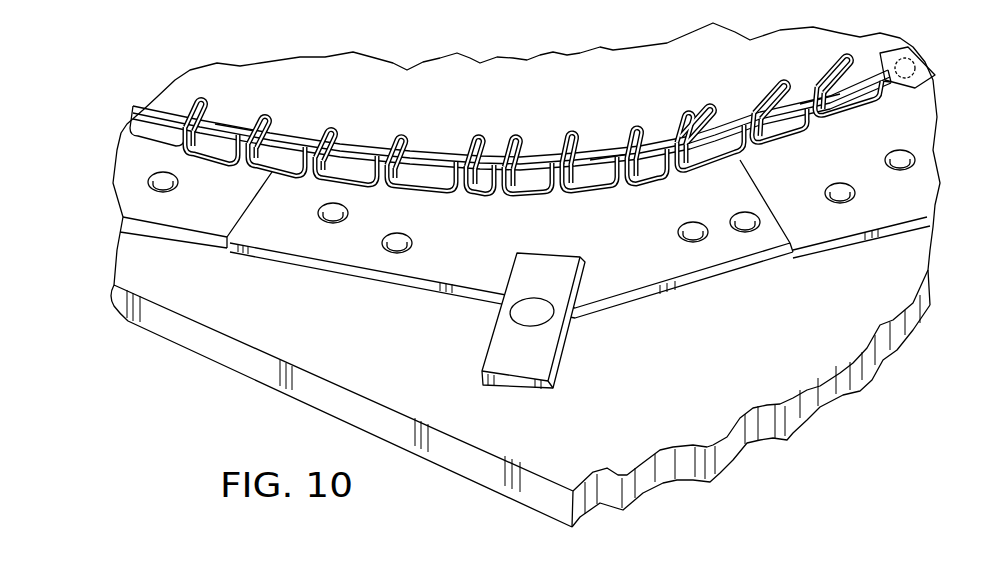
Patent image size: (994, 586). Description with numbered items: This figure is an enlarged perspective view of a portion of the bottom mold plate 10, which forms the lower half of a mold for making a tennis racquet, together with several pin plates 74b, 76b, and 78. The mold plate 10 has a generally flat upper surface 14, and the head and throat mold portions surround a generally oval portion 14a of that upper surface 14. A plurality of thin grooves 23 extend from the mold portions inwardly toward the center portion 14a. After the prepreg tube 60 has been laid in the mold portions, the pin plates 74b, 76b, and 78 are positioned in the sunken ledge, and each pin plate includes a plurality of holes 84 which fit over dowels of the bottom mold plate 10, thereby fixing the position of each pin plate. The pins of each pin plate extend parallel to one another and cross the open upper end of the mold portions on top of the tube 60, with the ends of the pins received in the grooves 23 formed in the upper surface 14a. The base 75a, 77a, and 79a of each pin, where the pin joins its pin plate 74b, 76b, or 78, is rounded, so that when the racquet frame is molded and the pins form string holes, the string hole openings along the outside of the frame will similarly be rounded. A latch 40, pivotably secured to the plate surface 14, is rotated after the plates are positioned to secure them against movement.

The mold plate 10 is at (517, 453).
The upper surface 14 is at (426, 384).
The oval portion of the upper surface 14a is at (531, 104).
The grooves 23 is at (282, 107).
The latch 40 is at (543, 353).
The tube 60 is at (897, 53).
The pin plate 74b is at (207, 215).
The base of pin 75a is at (237, 130).
The pin plate 76b is at (635, 266).
The base of pin 77a is at (614, 133).
The pin plate 78 is at (820, 227).
The base of pin 79a is at (823, 97).
The holes 84 is at (410, 238).